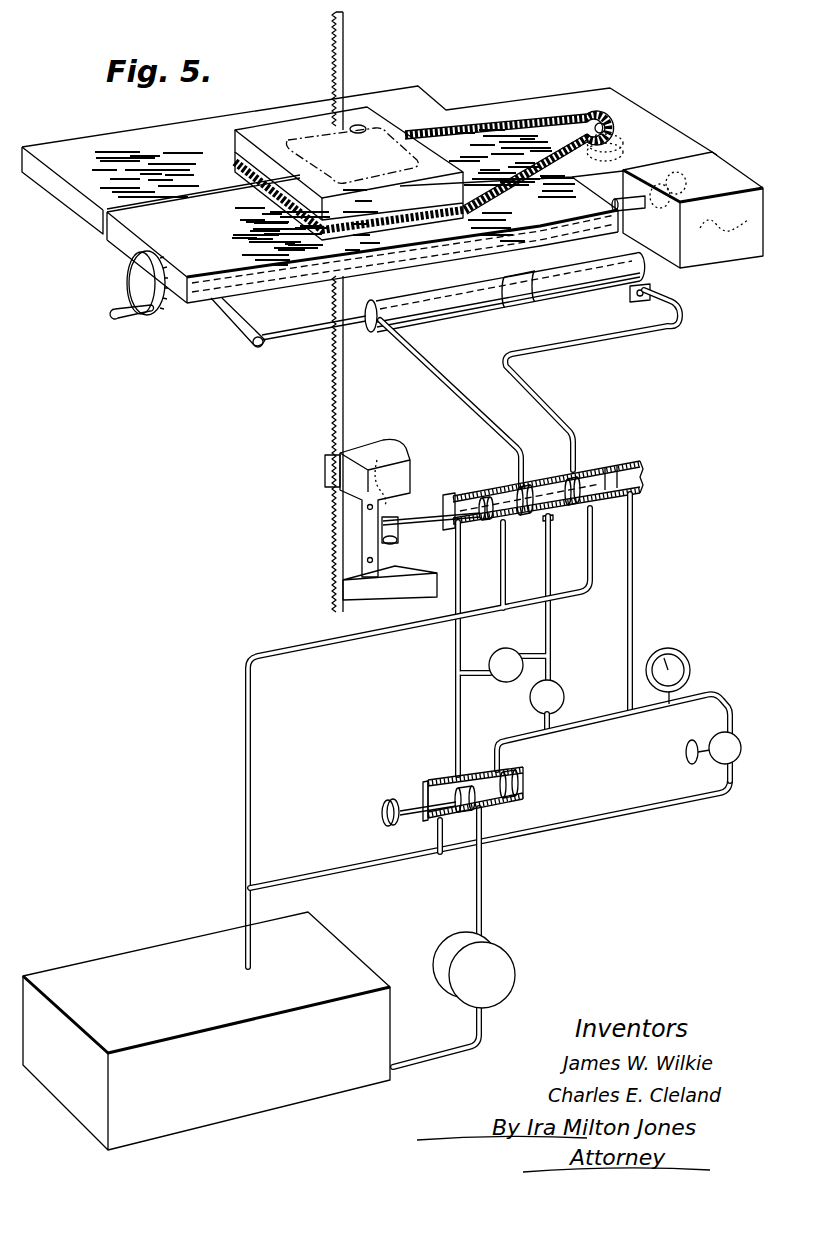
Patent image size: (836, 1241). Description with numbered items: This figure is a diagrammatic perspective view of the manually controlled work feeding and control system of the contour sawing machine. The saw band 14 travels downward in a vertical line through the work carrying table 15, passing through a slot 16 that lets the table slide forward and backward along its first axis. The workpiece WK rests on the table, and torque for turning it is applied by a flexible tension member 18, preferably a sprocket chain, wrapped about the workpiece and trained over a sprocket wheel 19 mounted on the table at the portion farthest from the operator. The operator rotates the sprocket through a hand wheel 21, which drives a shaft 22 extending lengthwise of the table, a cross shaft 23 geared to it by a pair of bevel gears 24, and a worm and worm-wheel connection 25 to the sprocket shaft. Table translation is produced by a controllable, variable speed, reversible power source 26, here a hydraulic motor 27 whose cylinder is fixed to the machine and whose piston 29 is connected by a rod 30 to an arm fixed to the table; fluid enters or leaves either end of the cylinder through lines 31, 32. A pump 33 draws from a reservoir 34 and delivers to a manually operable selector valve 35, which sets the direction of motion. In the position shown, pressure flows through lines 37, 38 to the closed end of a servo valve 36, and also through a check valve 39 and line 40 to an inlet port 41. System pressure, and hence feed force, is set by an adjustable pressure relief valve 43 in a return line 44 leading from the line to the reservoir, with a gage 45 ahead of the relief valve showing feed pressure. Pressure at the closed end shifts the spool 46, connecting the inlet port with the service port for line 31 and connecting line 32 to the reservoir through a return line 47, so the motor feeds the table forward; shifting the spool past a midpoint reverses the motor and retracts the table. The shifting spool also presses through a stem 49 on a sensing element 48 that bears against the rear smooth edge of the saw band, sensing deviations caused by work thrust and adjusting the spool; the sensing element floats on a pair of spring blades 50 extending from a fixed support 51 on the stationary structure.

The saw band 14 is at (340, 76).
The work carrying table 15 is at (197, 127).
The slot 16 is at (178, 197).
The flexible tension member 18 is at (470, 127).
The sprocket wheel 19 is at (596, 112).
The hand wheel 21 is at (138, 293).
The shaft 22 is at (637, 207).
The cross shaft 23 is at (672, 165).
The bevel gears 24 is at (693, 180).
The worm and worm-wheel connection 25 is at (622, 138).
The controllable variable speed reversible power source 26 is at (507, 314).
The hydraulic motor 27 is at (452, 313).
The piston 29 is at (513, 303).
The rod 30 is at (300, 328).
The line 31 is at (447, 377).
The line 32 is at (675, 322).
The pump 33 is at (507, 957).
The reservoir 34 is at (333, 953).
The manually operable selector valve 35 is at (552, 790).
The servo valve 36 is at (551, 474).
The line 37 is at (490, 786).
The line 38 is at (635, 572).
The check valve 39 is at (560, 682).
The line 40 is at (550, 633).
The inlet port 41 is at (551, 514).
The adjustable pressure relief valve 43 is at (732, 730).
The return line 44 is at (640, 807).
The gage 45 is at (688, 660).
The spool 46 is at (622, 462).
The return line 47 is at (320, 646).
The sensing element 48 is at (397, 452).
The stem 49 is at (420, 517).
The spring blades 50 is at (398, 541).
The fixed support 51 is at (397, 566).
The workpiece WK is at (290, 127).